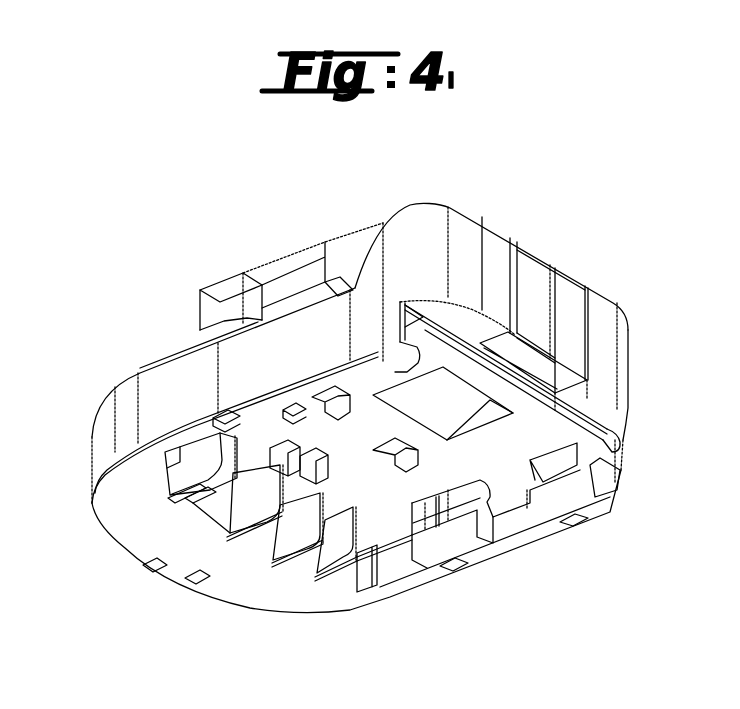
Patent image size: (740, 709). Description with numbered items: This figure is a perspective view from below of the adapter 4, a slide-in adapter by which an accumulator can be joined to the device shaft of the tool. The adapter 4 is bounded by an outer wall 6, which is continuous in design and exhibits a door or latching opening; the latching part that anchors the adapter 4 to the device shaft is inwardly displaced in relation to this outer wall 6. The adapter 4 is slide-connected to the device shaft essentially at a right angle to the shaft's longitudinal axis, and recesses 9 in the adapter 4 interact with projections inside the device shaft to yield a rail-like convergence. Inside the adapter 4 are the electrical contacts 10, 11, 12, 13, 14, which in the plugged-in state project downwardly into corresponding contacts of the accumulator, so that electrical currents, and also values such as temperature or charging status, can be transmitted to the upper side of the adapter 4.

The adapter 4 is at (207, 233).
The outer wall 6 is at (568, 280).
The recesses 9 is at (203, 340).
The electrical contact 10 is at (328, 555).
The electrical contact 11 is at (298, 540).
The electrical contact 12 is at (253, 513).
The electrical contact 13 is at (202, 490).
The electrical contact 14 is at (165, 480).